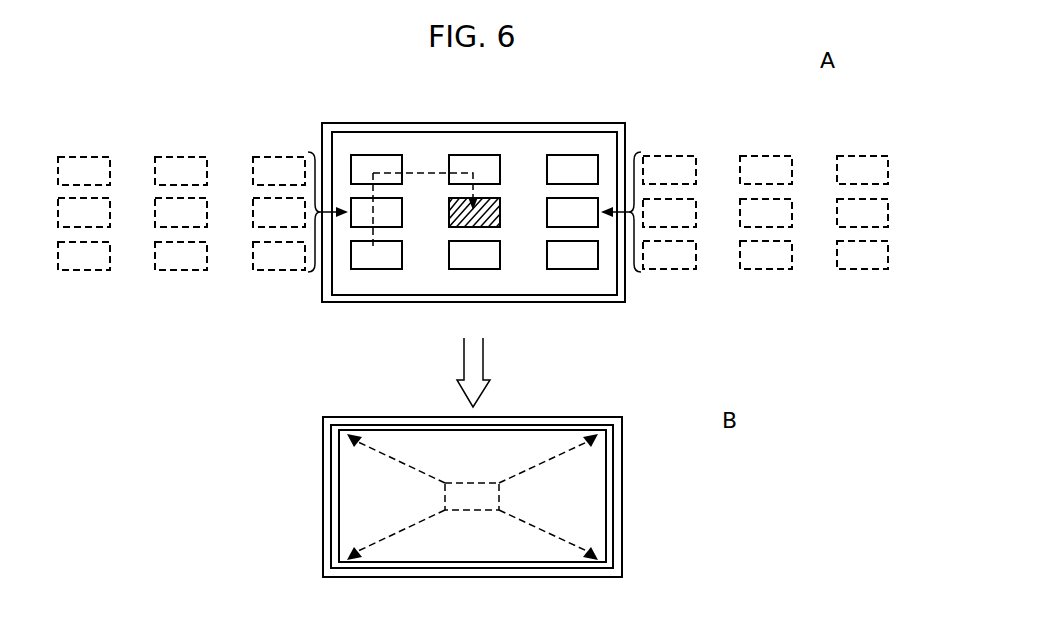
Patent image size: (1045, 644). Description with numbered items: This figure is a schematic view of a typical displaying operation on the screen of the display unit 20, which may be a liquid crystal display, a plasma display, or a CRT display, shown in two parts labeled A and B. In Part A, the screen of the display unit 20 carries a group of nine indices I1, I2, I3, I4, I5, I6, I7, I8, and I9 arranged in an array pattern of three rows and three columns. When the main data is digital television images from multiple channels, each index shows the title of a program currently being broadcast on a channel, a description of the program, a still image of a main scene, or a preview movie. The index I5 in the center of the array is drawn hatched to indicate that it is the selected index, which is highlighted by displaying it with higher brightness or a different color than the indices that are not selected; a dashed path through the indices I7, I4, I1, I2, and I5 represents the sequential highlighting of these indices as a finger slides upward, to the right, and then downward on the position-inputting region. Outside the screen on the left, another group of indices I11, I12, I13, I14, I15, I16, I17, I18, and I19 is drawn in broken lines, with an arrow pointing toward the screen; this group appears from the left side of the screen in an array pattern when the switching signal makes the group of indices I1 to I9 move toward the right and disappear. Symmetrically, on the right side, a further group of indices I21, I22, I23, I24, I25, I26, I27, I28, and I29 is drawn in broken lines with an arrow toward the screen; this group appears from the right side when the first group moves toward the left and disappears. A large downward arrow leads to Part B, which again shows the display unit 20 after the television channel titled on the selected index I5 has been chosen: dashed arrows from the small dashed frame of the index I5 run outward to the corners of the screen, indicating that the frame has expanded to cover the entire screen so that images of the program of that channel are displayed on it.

The display unit 20 is at (604, 108).
The index I1 is at (366, 157).
The index I2 is at (457, 157).
The index I3 is at (556, 157).
The index I4 is at (398, 213).
The selected index I5 is at (500, 218).
The index I6 is at (592, 212).
The index I7 is at (357, 268).
The index I8 is at (460, 268).
The index I9 is at (558, 268).
The index I11 is at (70, 158).
The index I12 is at (167, 158).
The index I13 is at (265, 158).
The index I14 is at (63, 212).
The index I15 is at (158, 212).
The index I16 is at (255, 212).
The index I17 is at (73, 268).
The index I18 is at (171, 268).
The index I19 is at (268, 268).
The index I21 is at (663, 158).
The index I22 is at (759, 158).
The index I23 is at (856, 158).
The index I24 is at (697, 213).
The index I25 is at (793, 213).
The index I26 is at (889, 213).
The index I27 is at (657, 268).
The index I28 is at (754, 268).
The index I29 is at (851, 268).